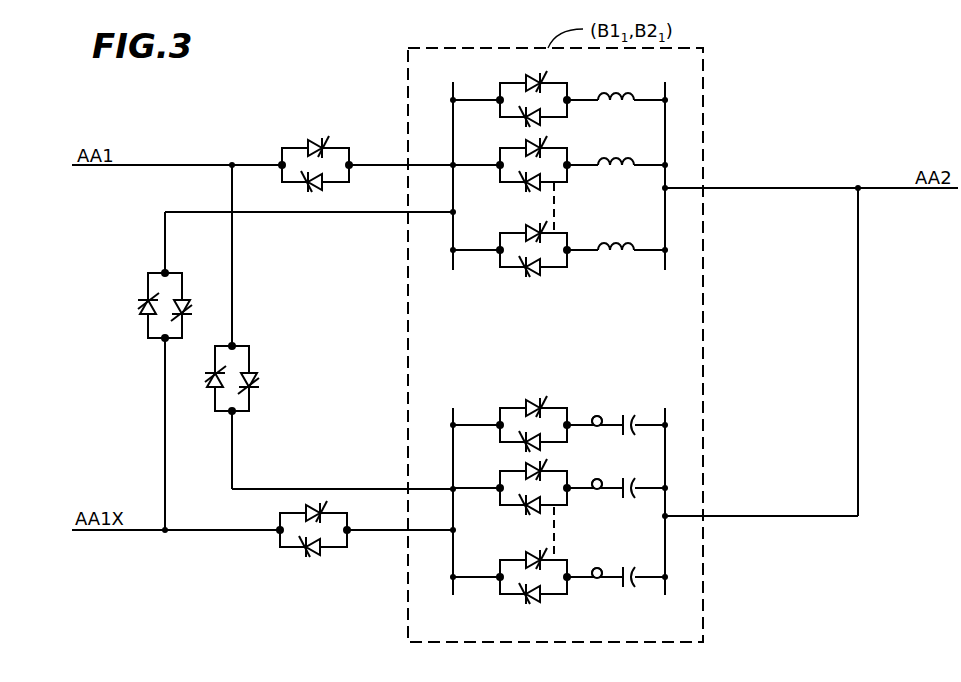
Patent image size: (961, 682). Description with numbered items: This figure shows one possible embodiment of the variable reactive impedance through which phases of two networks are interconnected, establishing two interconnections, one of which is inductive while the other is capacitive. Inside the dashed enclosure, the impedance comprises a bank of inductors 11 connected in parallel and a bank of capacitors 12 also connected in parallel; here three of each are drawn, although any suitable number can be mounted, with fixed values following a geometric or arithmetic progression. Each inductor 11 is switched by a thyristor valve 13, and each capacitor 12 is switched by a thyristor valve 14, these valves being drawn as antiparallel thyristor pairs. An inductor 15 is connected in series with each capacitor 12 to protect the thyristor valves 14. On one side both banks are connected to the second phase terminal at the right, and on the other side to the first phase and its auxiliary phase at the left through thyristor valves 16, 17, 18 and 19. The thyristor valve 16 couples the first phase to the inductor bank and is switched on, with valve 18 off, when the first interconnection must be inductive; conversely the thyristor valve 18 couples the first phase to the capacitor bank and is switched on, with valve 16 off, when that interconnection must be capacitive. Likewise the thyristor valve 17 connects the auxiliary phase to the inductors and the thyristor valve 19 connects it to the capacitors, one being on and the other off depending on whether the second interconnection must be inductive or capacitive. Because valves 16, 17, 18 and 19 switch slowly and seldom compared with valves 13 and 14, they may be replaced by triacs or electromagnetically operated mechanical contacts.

The inductors 11 is at (628, 103).
The capacitors 12 is at (630, 436).
The thyristor valves 13 is at (500, 118).
The thyristor valves 14 is at (500, 443).
The inductor 15 is at (598, 428).
The thyristor valve 16 is at (283, 148).
The thyristor valve 17 is at (148, 281).
The thyristor valve 18 is at (247, 360).
The thyristor valve 19 is at (282, 548).